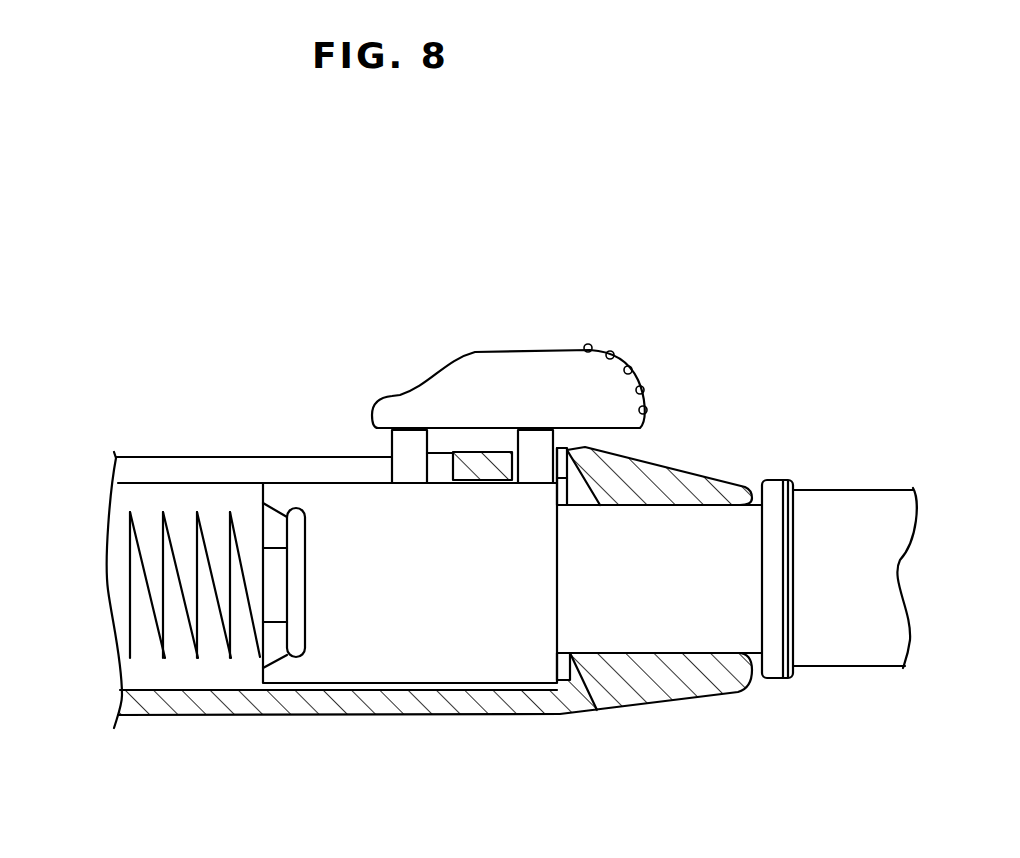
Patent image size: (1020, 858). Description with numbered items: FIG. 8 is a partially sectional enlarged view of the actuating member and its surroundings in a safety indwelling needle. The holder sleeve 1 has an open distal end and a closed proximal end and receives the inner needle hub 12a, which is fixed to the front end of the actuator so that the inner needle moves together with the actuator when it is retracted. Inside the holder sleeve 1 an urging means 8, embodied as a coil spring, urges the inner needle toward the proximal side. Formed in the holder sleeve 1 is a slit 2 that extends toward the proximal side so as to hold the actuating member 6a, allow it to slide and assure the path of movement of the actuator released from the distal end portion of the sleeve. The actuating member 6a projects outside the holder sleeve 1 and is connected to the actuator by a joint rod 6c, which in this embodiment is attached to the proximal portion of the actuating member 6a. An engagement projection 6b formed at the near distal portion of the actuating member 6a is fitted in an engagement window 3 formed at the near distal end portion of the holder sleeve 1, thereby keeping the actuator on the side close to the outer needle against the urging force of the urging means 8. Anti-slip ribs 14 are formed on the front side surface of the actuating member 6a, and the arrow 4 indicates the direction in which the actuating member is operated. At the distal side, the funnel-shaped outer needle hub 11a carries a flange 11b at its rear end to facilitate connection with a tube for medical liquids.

The holder sleeve 1 is at (177, 716).
The slit 2 is at (185, 457).
The engagement window 3 is at (507, 449).
The push button assembly 4 is at (537, 327).
The actuating member 6a is at (455, 377).
The engagement projection 6b is at (530, 437).
The joint rod 6c is at (396, 470).
The urging means 8 is at (124, 630).
The outer needle hub 11a is at (840, 668).
The flange 11b is at (772, 680).
The inner needle hub 12a is at (658, 632).
The anti-slip ribs 14 is at (634, 372).